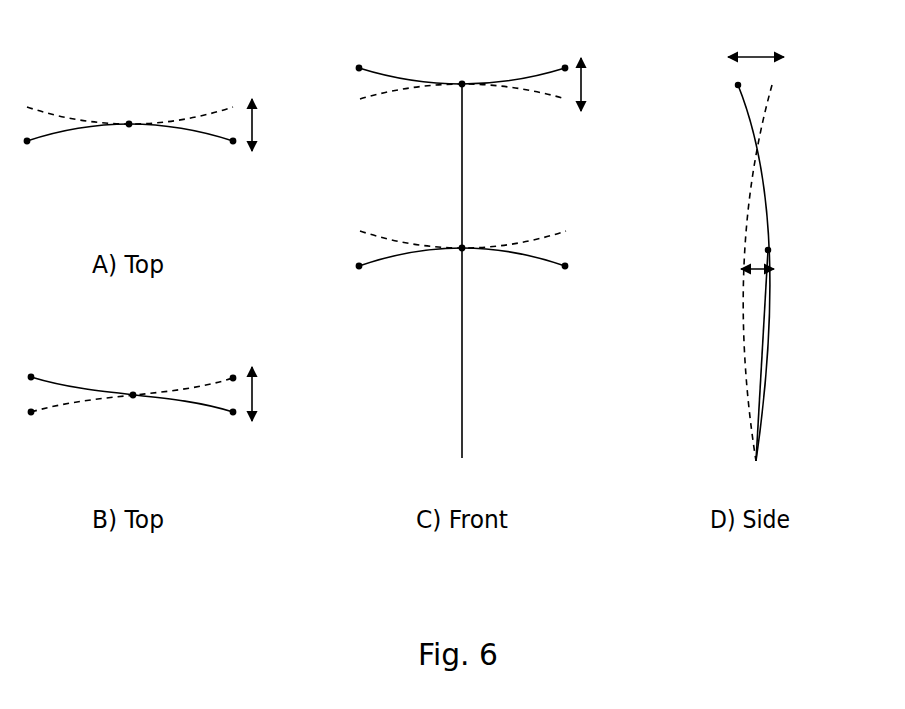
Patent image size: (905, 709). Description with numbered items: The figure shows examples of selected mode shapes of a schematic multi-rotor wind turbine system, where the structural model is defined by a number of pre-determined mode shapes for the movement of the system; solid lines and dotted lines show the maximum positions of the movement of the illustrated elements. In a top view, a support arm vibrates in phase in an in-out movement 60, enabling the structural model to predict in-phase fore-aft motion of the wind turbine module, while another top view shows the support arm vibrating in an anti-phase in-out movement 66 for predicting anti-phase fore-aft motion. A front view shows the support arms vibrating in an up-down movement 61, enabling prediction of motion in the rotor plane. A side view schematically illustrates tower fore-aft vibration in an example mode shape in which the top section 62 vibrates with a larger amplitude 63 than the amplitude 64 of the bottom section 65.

The in-out movement 60 is at (243, 147).
The up-down movement 61 is at (573, 108).
The top section 62 is at (767, 188).
The amplitude 63 is at (757, 53).
The amplitude 64 is at (758, 275).
The bottom section 65 is at (766, 305).
The in-out movement 66 is at (243, 418).